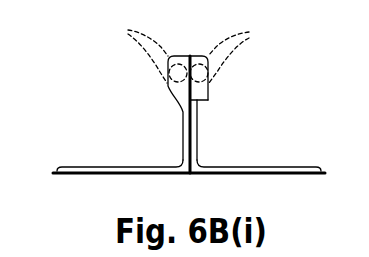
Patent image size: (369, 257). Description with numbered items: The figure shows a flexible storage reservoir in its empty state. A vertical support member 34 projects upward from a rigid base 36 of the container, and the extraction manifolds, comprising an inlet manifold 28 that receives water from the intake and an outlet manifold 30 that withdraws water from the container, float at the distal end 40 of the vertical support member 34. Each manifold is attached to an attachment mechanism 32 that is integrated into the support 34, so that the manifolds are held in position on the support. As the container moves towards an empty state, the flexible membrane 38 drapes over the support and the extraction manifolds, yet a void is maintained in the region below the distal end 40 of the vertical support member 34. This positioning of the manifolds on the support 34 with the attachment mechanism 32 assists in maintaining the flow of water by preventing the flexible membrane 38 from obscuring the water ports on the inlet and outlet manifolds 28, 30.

The inlet manifold 28 is at (145, 50).
The outlet manifold 30 is at (231, 50).
The attachment mechanism 32 is at (188, 72).
The vertical support member 34 is at (208, 100).
The rigid base 36 is at (82, 175).
The flexible membrane 38 is at (130, 167).
The distal end 40 is at (190, 56).